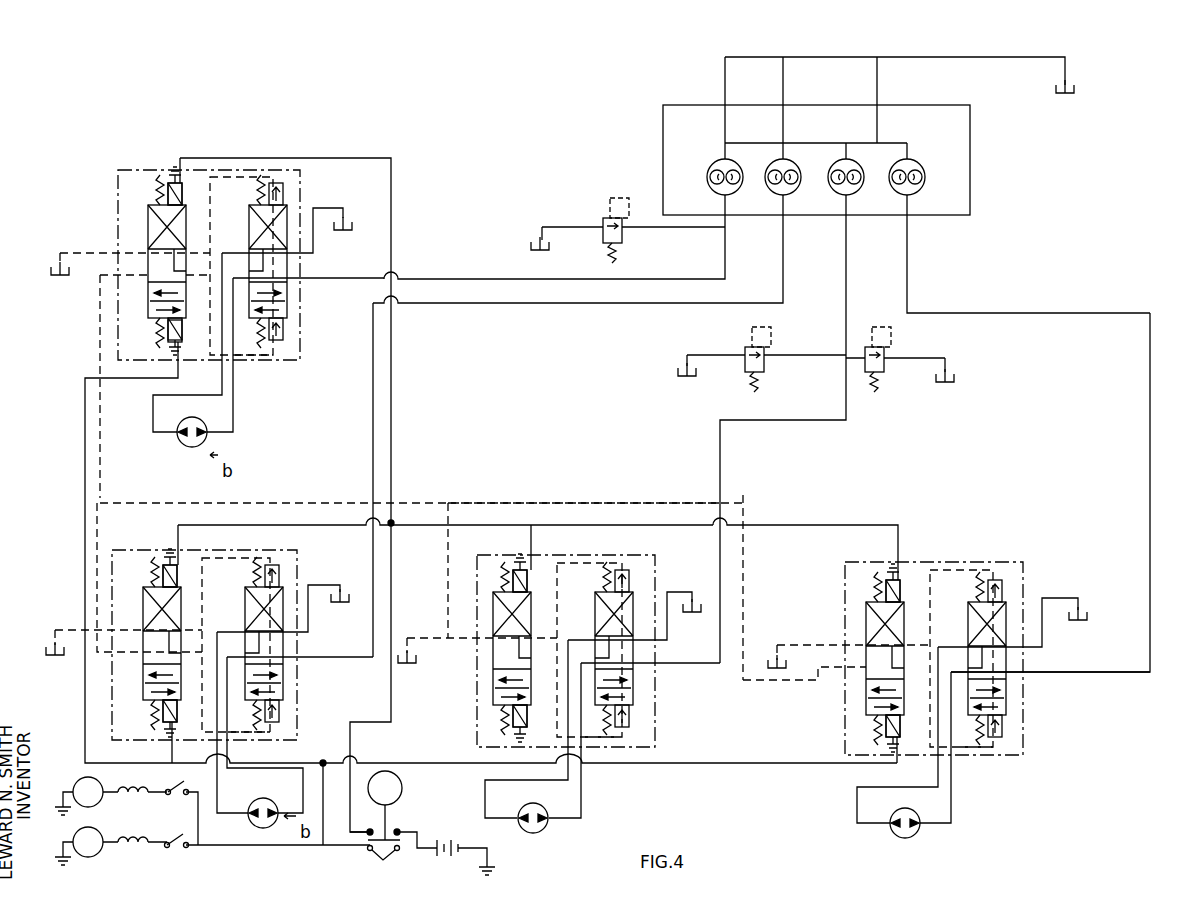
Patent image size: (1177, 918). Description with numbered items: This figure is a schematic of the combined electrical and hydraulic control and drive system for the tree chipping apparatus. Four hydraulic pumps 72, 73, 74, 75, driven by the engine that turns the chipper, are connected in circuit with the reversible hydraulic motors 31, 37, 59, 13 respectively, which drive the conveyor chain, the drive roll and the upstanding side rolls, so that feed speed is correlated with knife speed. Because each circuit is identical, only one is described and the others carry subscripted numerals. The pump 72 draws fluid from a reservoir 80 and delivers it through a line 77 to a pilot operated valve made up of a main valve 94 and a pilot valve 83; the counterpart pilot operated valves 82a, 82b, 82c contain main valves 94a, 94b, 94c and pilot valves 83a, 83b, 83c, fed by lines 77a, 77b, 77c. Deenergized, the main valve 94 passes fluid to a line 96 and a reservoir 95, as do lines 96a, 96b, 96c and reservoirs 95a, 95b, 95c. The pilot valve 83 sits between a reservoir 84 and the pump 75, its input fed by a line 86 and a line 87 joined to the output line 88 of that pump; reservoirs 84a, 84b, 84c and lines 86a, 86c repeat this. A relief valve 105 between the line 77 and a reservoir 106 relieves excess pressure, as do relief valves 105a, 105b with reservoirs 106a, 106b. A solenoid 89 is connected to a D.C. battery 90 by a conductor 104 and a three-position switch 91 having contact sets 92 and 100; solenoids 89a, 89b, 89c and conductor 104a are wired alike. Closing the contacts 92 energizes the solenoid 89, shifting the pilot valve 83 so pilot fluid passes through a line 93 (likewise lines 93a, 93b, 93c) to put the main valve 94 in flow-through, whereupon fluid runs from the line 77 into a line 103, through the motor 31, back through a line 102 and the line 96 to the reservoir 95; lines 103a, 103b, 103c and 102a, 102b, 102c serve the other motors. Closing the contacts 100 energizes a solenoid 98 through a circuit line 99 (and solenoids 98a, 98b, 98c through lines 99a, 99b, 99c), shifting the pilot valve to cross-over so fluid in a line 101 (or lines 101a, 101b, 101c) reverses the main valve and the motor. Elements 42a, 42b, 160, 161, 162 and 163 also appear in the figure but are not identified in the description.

The rotary fluid motor 13 is at (914, 838).
The rotary fluid motor 31 is at (182, 449).
The reversible hydraulic motor 37 is at (250, 826).
The solenoid coil 42a is at (123, 838).
The solenoid coil 42b is at (123, 788).
The rotary fluid motor 59 is at (546, 832).
The hydraulic pump 72 is at (734, 190).
The hydraulic pump 73 is at (792, 190).
The hydraulic pump 74 is at (854, 190).
The hydraulic pump 75 is at (917, 190).
The line 77 is at (446, 280).
The line 77a is at (588, 308).
The line 77b is at (720, 460).
The line 77c is at (1150, 550).
The reservoir 80 is at (1073, 96).
The pilot operated valve 82a is at (136, 550).
The pilot operated valve 82b is at (510, 557).
The pilot operated valve 82c is at (868, 560).
The pilot valve 83 is at (140, 232).
The pilot valve 83a is at (132, 600).
The pilot valve 83b is at (484, 612).
The pilot valve 83c is at (866, 624).
The reservoir 84 is at (42, 274).
The reservoir 84a is at (56, 658).
The reservoir 84b is at (410, 662).
The reservoir 84c is at (777, 670).
The line 86 is at (92, 296).
The line 86a is at (100, 662).
The line 86c is at (740, 628).
The line 87 is at (580, 498).
The output line 88 is at (1147, 406).
The solenoid 89 is at (180, 324).
The solenoid 89a is at (168, 714).
The solenoid 89b is at (514, 722).
The solenoid 89c is at (900, 740).
The D.C. battery 90 is at (458, 844).
The three-position switch 91 is at (396, 815).
The switch contacts 92 is at (384, 864).
The line 93 is at (240, 356).
The line 93a is at (266, 734).
The line 93b is at (614, 738).
The line 93c is at (967, 752).
The main valve 94 is at (290, 190).
The main valve 94a is at (285, 596).
The main valve 94b is at (644, 581).
The main valve 94c is at (1008, 592).
The reservoir 95 is at (346, 228).
The reservoir 95a is at (318, 620).
The reservoir 95b is at (668, 630).
The reservoir 95c is at (1078, 626).
The line 96 is at (316, 258).
The line 96a is at (304, 642).
The line 96b is at (660, 648).
The line 96c is at (1041, 647).
The solenoid 98 is at (178, 190).
The solenoid 98a is at (176, 572).
The solenoid 98b is at (528, 572).
The solenoid 98c is at (912, 582).
The circuit line 99 is at (391, 382).
The circuit line 99a is at (308, 530).
The circuit line 99b is at (595, 587).
The circuit line 99c is at (901, 536).
The switch contacts 100 is at (401, 830).
The line 101 is at (228, 169).
The line 101a is at (224, 558).
The line 101b is at (578, 564).
The line 101c is at (966, 568).
The line 102 is at (224, 250).
The line 102a is at (226, 614).
The line 102b is at (576, 622).
The line 102c is at (942, 630).
The line 103 is at (238, 418).
The line 103a is at (299, 788).
The line 103b is at (581, 786).
The line 103c is at (952, 802).
The conductor 104 is at (82, 458).
The conductor 104a is at (174, 752).
The relief valve 105 is at (623, 240).
The relief valve 105a is at (764, 362).
The relief valve 105b is at (874, 372).
The reservoir 106 is at (542, 254).
The reservoir 106a is at (684, 380).
The reservoir 106b is at (948, 388).
The switch 160 is at (176, 848).
The switch 161 is at (182, 782).
The solenoid 162 is at (90, 852).
The solenoid 163 is at (80, 782).